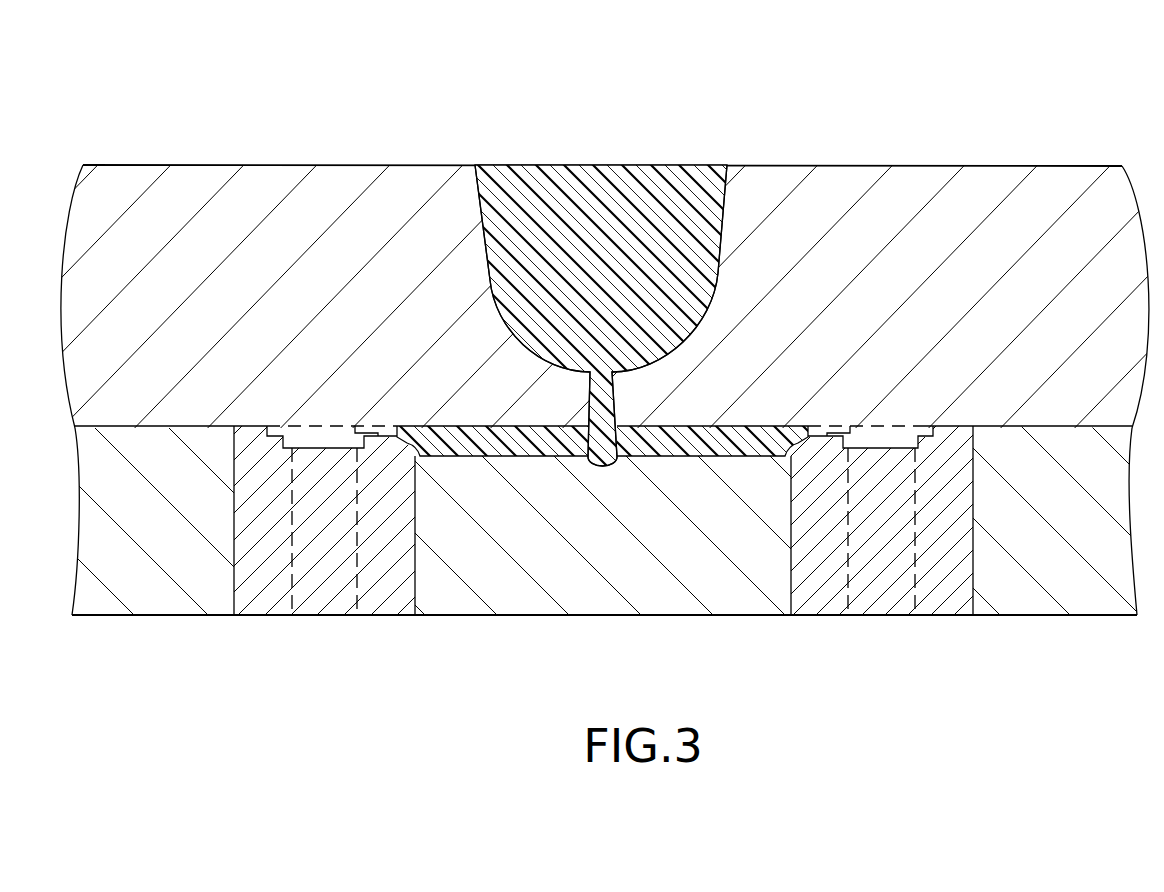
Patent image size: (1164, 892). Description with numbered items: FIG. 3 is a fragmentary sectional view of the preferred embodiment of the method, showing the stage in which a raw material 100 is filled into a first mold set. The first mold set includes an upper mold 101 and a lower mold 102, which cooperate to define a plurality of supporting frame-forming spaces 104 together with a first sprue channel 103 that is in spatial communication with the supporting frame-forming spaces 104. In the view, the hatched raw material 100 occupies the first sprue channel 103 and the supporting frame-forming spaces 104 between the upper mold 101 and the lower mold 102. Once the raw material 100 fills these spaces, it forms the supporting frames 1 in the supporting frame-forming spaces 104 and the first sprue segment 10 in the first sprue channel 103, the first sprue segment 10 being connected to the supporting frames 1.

The supporting frame 1 is at (273, 427).
The first sprue segment 10 is at (527, 457).
The raw material 100 is at (618, 183).
The upper mold 101 is at (998, 180).
The lower mold 102 is at (325, 583).
The first sprue channel 103 is at (463, 457).
The supporting frame-forming space 104 is at (274, 436).